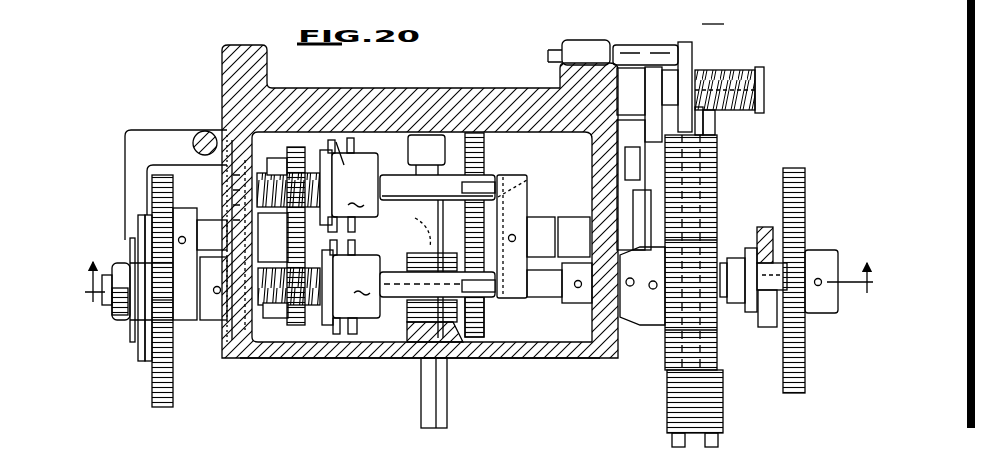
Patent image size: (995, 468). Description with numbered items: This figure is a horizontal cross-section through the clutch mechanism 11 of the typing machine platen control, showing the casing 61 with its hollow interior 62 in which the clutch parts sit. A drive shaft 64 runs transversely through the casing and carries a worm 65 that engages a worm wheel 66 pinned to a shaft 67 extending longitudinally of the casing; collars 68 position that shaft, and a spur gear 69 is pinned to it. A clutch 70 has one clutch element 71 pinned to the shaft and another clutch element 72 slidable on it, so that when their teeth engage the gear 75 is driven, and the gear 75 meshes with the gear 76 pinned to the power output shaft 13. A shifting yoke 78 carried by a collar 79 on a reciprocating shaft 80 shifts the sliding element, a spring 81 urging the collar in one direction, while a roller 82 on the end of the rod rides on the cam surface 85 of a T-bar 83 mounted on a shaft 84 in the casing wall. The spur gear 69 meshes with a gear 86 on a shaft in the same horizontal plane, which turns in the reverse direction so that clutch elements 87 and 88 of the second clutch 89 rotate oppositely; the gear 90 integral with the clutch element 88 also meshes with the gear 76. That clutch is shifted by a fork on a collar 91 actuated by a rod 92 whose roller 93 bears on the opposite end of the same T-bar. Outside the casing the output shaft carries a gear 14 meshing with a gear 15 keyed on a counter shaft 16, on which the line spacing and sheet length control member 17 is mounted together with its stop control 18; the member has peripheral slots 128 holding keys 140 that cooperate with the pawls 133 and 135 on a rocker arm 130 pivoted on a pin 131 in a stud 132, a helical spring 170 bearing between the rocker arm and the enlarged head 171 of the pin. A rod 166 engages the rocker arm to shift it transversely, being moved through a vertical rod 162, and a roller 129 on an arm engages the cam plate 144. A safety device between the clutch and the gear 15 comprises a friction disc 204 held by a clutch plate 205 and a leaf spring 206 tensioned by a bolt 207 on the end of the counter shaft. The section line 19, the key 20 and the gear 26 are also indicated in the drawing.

The clutch mechanism 11 is at (467, 100).
The power output shaft 13 is at (227, 220).
The gear 14 is at (172, 194).
The gear 15 is at (160, 387).
The counter shaft 16 is at (111, 313).
The line spacing and sheet length control member 17 is at (707, 177).
The stop control 18 is at (724, 24).
The section line 19 is at (481, 271).
The key 20 is at (765, 224).
The gear 26 is at (805, 228).
The casing 61 is at (570, 358).
The hollow interior 62 is at (524, 338).
The drive shaft 64 is at (447, 382).
The worm 65 is at (415, 257).
The worm wheel 66 is at (420, 269).
The shaft 67 is at (543, 292).
The collars 68 is at (573, 298).
The spur gear 69 is at (484, 327).
The clutch 70 is at (345, 325).
The clutch element 71 is at (356, 328).
The clutch element 72 is at (332, 333).
The gear 75 is at (292, 328).
The gear 76 is at (295, 243).
The shifting yoke 78 is at (328, 268).
The collar 79 is at (356, 286).
The shaft 80 is at (437, 284).
The spring 81 is at (233, 347).
The roller 82 is at (483, 285).
The T-bar 83 is at (518, 205).
The shaft 84 is at (570, 228).
The cam surface 85 is at (528, 176).
The gear 86 is at (484, 141).
The clutch element 87 is at (354, 142).
The clutch element 88 is at (355, 185).
The clutch 89 is at (340, 140).
The gear 90 is at (292, 147).
The collar 91 is at (356, 195).
The rod 92 is at (413, 192).
The roller 93 is at (465, 186).
The slots 128 is at (710, 347).
The roller 129 is at (633, 163).
The rocker arm 130 is at (690, 60).
The pin 131 is at (745, 70).
The stud 132 is at (594, 40).
The pawl 133 is at (660, 112).
The pawl 135 is at (707, 125).
The keys 140 is at (710, 447).
The cam plate 144 is at (680, 177).
The rod 162 is at (207, 132).
The rod 166 is at (643, 45).
The helical spring 170 is at (753, 78).
The enlarged head 171 is at (757, 100).
The friction disc 204 is at (148, 217).
The clutch plate 205 is at (142, 221).
The leaf spring 206 is at (133, 338).
The bolt 207 is at (123, 276).